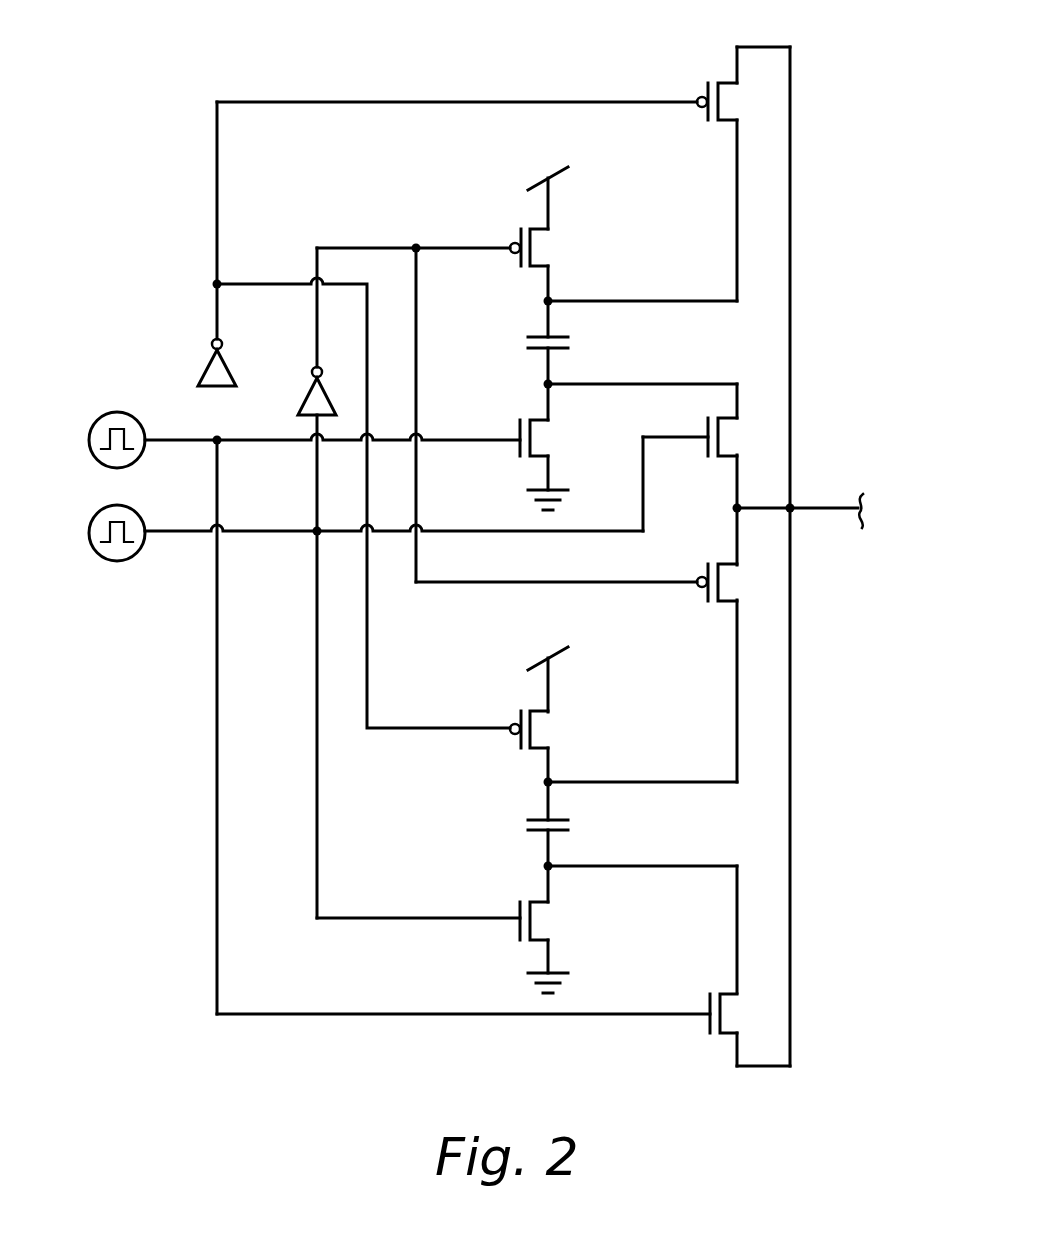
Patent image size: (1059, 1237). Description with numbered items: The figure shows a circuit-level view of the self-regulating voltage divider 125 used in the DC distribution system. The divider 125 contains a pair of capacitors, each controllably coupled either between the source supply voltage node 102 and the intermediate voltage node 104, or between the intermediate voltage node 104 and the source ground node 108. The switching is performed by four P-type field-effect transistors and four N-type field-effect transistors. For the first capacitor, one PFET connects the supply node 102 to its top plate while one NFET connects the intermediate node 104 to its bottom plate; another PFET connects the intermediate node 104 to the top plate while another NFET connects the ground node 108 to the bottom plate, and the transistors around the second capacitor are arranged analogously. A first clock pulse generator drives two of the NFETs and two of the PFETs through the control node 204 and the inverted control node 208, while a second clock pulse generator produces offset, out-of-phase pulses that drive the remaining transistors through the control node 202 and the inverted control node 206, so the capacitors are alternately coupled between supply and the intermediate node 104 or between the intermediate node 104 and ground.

The self-regulating voltage divider 125 is at (521, 58).
The control node 202 is at (214, 437).
The control node 204 is at (312, 528).
The inverted control node 206 is at (215, 284).
The inverted control node 208 is at (416, 246).
The source supply voltage node 102 is at (551, 196).
The source ground node 108 is at (552, 465).
The intermediate voltage node 104 is at (832, 507).